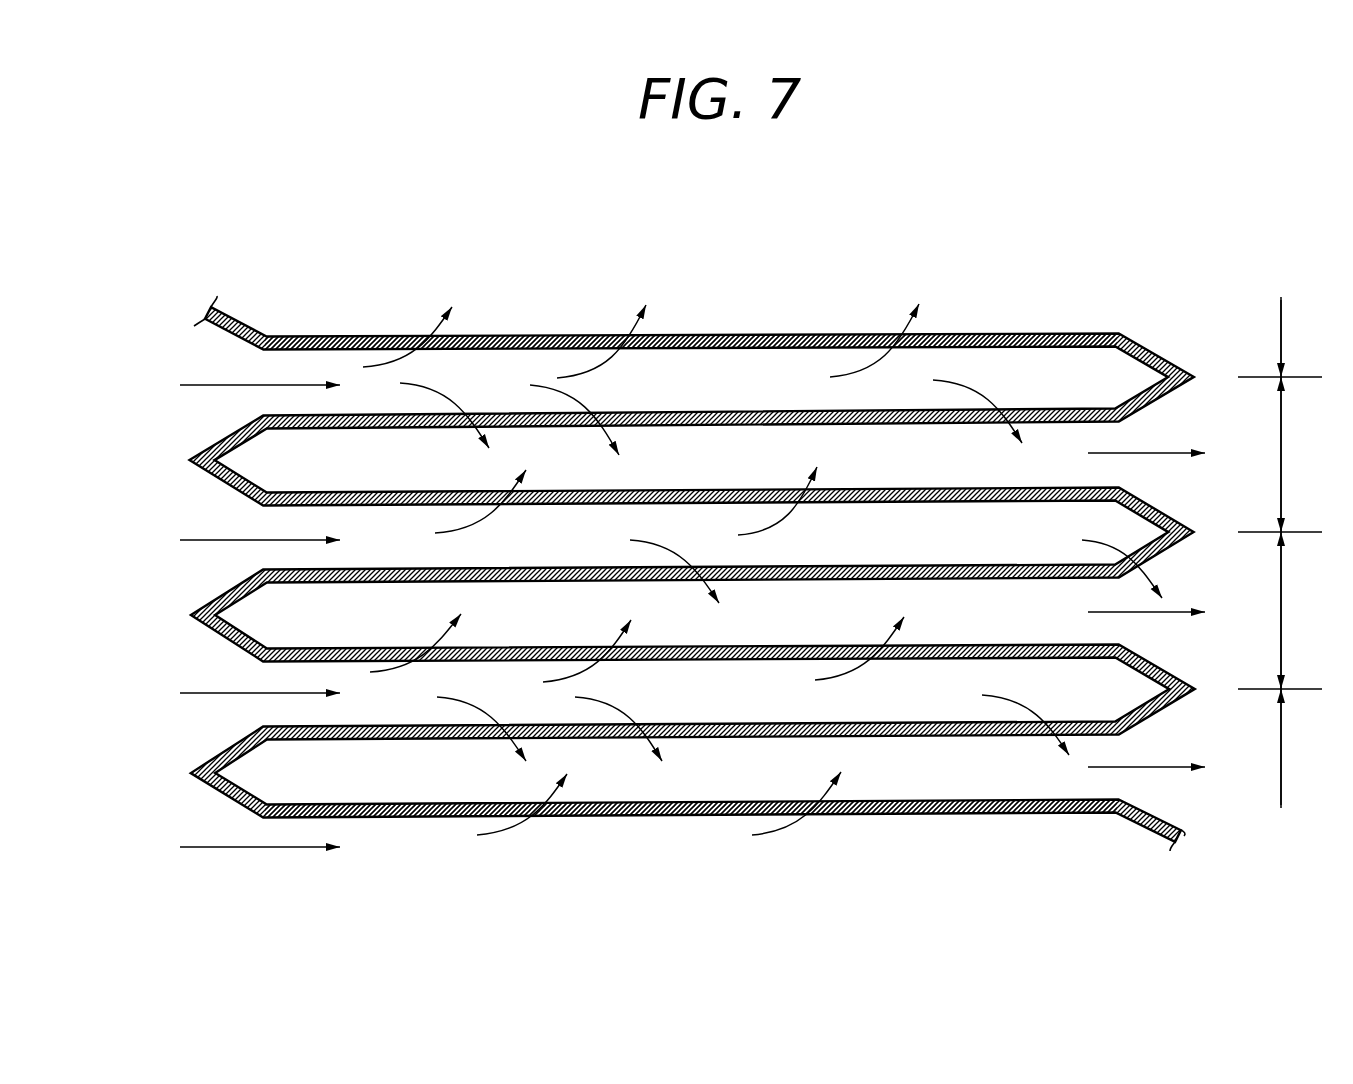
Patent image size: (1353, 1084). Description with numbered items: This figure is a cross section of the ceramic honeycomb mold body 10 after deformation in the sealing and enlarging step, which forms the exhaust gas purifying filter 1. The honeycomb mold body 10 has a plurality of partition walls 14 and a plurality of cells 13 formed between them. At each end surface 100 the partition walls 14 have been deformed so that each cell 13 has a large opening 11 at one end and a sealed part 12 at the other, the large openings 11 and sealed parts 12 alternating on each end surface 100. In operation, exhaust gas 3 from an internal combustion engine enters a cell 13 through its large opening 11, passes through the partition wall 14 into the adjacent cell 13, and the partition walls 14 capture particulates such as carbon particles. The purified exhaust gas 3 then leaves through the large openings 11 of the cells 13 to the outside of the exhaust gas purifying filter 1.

The exhaust gas purifying filter 1 is at (955, 232).
The exhaust gas 3 is at (230, 693).
The ceramic honeycomb mold body 10 is at (782, 268).
The large opening 11 is at (232, 433).
The sealed part 12 is at (188, 462).
The cell 13 is at (699, 455).
The partition wall 14 is at (367, 334).
The end surface 100 is at (1235, 351).